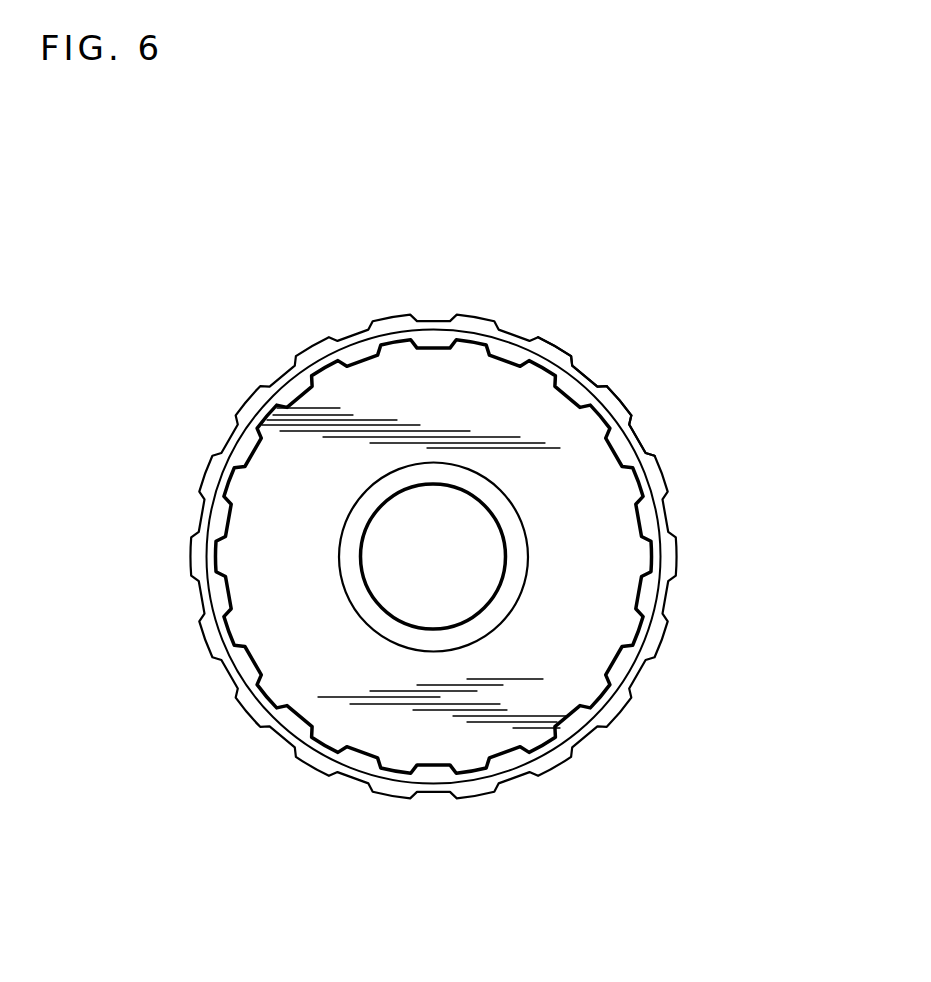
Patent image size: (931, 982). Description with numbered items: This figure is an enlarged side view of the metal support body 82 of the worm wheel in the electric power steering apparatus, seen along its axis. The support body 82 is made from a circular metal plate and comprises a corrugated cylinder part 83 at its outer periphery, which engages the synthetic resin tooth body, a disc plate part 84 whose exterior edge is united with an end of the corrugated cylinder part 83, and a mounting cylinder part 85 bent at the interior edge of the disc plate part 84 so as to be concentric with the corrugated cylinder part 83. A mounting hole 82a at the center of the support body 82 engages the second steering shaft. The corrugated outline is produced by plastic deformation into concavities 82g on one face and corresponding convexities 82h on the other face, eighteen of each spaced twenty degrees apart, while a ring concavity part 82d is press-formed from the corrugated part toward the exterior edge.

The support body 82 is at (478, 315).
The convexities 82h is at (567, 392).
The concavities 82g is at (640, 443).
The ring concavity part 82d is at (660, 490).
The corrugated cylinder part 83 is at (674, 558).
The disc plate part 84 is at (620, 598).
The mounting cylinder part 85 is at (505, 607).
The mounting hole 82a is at (475, 607).